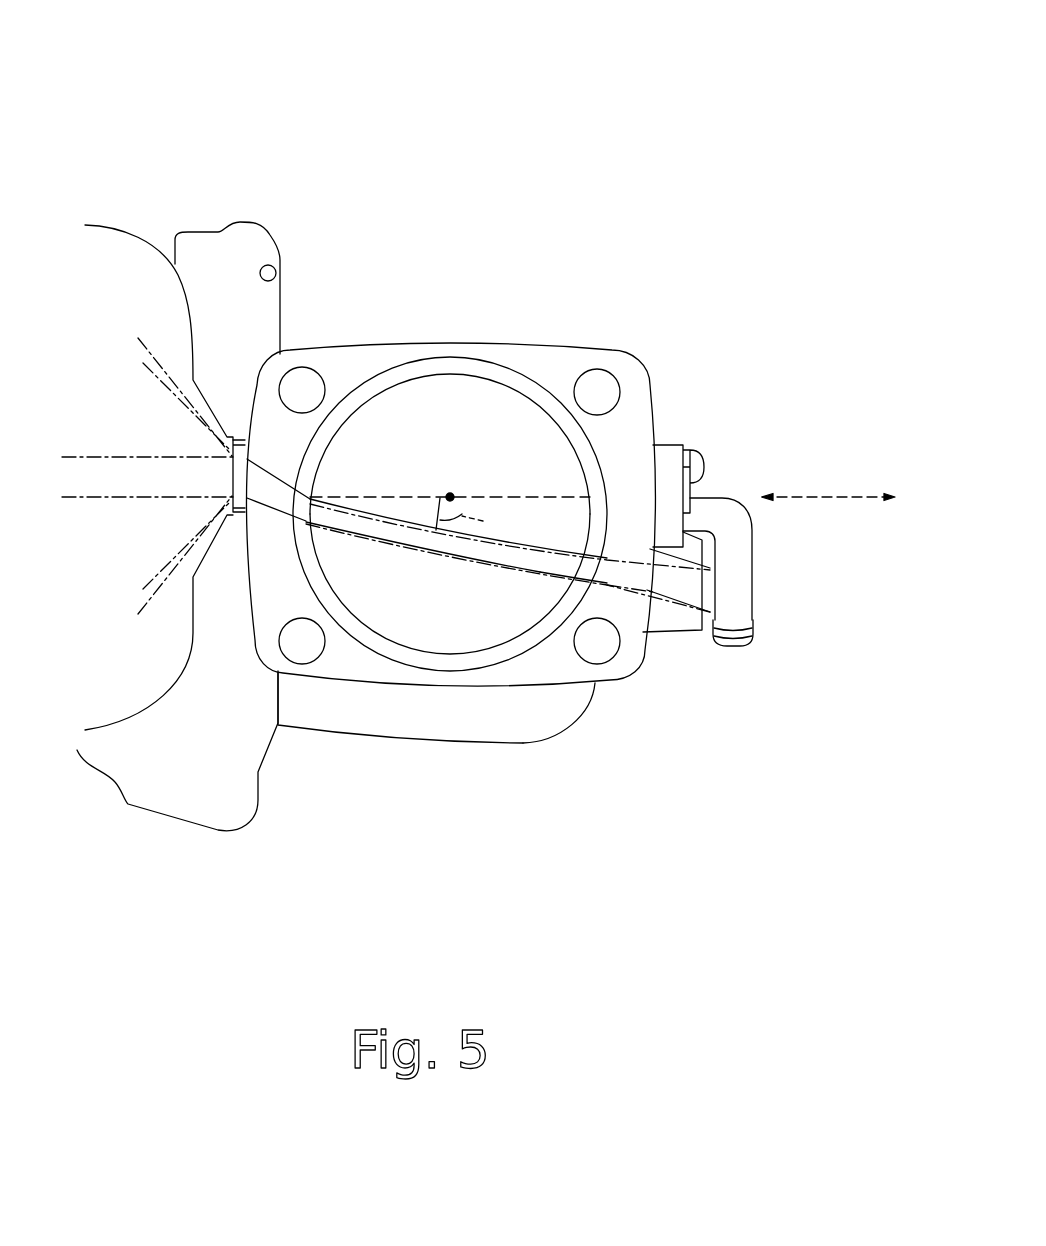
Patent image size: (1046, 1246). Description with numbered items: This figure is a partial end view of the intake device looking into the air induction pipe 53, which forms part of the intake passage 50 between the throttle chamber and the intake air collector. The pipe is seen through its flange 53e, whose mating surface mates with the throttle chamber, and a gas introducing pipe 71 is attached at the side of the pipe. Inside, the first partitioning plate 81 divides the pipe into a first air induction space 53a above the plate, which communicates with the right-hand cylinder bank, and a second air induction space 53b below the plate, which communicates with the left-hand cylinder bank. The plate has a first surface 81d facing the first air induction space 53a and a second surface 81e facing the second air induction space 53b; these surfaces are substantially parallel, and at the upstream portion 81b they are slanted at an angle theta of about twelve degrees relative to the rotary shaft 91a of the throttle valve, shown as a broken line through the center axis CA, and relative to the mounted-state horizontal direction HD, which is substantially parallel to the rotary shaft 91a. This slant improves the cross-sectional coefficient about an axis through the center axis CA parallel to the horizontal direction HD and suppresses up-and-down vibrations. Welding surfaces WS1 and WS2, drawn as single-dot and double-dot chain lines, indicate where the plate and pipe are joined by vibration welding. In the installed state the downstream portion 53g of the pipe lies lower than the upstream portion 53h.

The intake passage 50 is at (640, 100).
The air induction pipe 53 is at (600, 213).
The flange 53e is at (548, 365).
The first air induction space 53a is at (483, 415).
The second air induction space 53b is at (483, 645).
The downstream portion 53g is at (468, 758).
The upstream portion 53h is at (492, 700).
The first partitioning plate 81 is at (478, 526).
The upstream portion 81b is at (410, 537).
The first surface 81d is at (365, 512).
The second surface 81e is at (548, 577).
The rotary shaft 91a is at (520, 495).
The gas introducing pipe 71 is at (735, 575).
The welding surface WS1 is at (113, 457).
The welding surface WS2 is at (115, 500).
The horizontal direction HD is at (833, 497).
The center axis CA is at (452, 490).